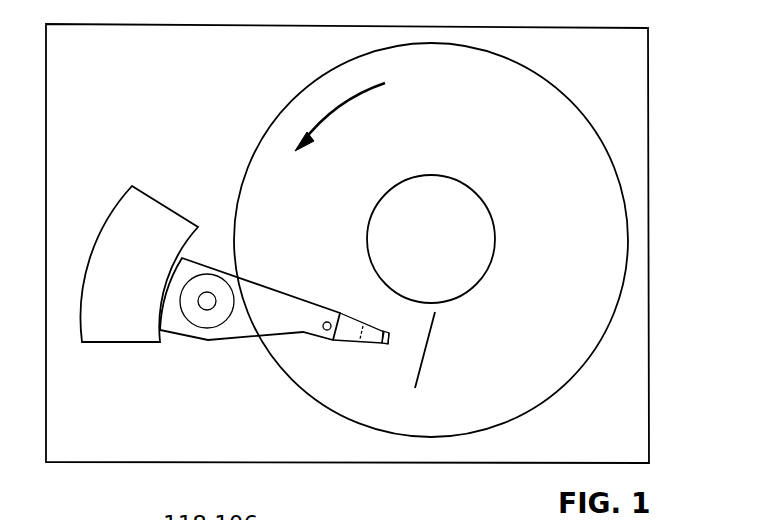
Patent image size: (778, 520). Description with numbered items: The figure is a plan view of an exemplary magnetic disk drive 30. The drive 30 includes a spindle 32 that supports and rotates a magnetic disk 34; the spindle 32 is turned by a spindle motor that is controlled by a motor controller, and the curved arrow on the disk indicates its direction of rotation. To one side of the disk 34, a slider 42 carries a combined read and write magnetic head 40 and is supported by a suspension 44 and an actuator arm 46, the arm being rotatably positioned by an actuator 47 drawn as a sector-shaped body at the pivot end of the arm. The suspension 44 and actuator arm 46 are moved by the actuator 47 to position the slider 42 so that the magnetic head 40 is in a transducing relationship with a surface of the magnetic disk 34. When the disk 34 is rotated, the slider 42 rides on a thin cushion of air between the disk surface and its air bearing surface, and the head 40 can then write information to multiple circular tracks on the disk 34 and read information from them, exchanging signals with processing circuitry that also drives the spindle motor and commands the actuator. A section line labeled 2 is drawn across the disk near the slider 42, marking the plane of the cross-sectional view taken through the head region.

The disk drive 30 is at (672, 60).
The spindle 32 is at (470, 187).
The disk 34 is at (572, 261).
The head 40 is at (393, 345).
The slider 42 is at (391, 333).
The suspension 44 is at (350, 344).
The actuator arm 46 is at (292, 302).
The voice coil 47 is at (172, 210).
The section line 2- 2 is at (445, 320).